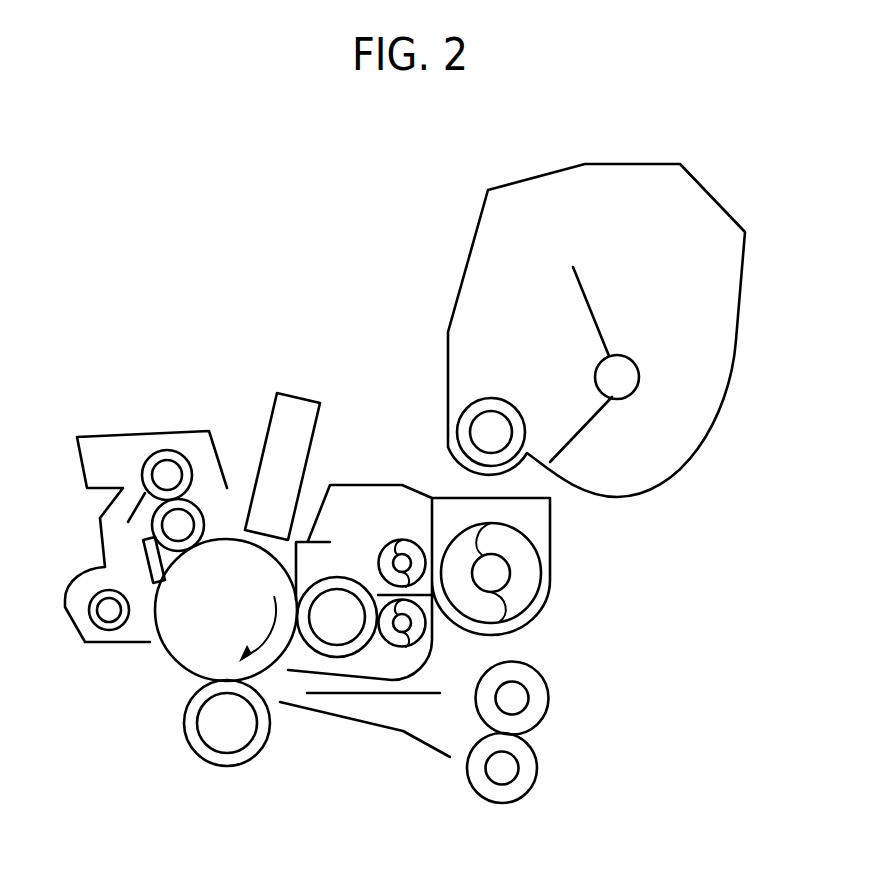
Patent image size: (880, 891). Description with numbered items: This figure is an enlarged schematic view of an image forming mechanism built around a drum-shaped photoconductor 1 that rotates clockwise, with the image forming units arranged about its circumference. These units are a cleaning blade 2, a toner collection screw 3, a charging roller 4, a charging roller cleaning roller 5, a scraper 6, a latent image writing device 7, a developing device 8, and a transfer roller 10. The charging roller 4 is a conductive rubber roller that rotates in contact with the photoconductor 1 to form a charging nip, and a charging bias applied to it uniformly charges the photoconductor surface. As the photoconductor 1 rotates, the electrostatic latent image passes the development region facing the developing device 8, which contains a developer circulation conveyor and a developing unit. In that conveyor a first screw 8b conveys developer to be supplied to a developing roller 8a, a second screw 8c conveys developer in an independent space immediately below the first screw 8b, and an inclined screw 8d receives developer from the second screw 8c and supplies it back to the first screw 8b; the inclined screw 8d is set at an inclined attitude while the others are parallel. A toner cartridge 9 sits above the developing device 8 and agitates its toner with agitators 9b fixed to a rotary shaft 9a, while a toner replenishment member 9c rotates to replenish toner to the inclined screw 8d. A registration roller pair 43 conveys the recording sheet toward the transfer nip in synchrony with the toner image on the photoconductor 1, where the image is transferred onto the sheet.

The photoconductor 1 is at (236, 624).
The cleaning blade 2 is at (143, 551).
The toner collection screw 3 is at (88, 605).
The charging roller 4 is at (198, 507).
The charging roller cleaning roller 5 is at (168, 450).
The scraper 6 is at (140, 495).
The latent image writing device 7 is at (298, 393).
The developing device 8 is at (556, 543).
The developing roller 8a is at (331, 565).
The first screw 8b is at (403, 540).
The second screw 8c is at (427, 635).
The inclined screw 8d is at (549, 592).
The toner cartridge 9 is at (740, 340).
The rotary shaft 9a is at (639, 367).
The agitators 9b is at (588, 300).
The toner replenishment member 9c is at (508, 398).
The transfer roller 10 is at (253, 755).
The registration roller pair 43 is at (483, 805).